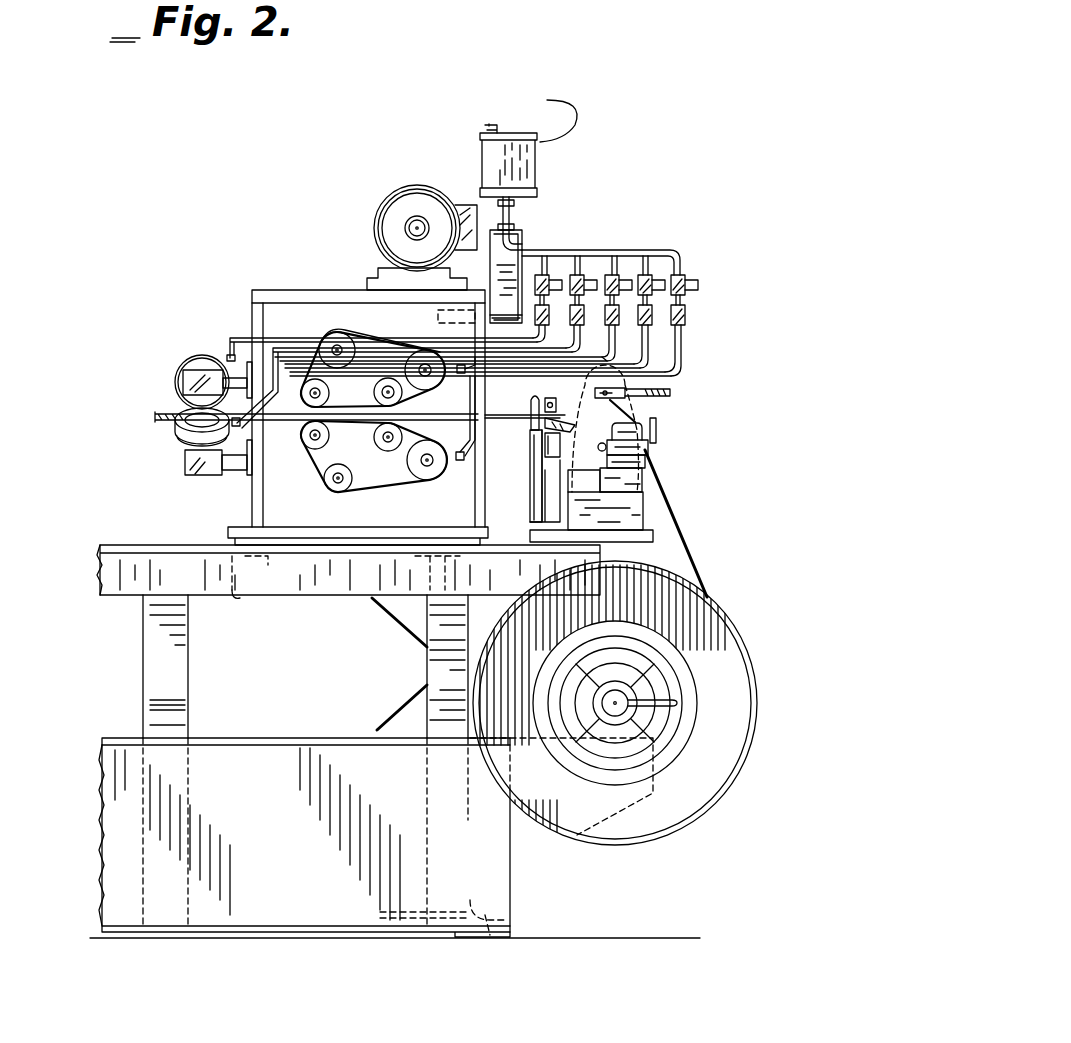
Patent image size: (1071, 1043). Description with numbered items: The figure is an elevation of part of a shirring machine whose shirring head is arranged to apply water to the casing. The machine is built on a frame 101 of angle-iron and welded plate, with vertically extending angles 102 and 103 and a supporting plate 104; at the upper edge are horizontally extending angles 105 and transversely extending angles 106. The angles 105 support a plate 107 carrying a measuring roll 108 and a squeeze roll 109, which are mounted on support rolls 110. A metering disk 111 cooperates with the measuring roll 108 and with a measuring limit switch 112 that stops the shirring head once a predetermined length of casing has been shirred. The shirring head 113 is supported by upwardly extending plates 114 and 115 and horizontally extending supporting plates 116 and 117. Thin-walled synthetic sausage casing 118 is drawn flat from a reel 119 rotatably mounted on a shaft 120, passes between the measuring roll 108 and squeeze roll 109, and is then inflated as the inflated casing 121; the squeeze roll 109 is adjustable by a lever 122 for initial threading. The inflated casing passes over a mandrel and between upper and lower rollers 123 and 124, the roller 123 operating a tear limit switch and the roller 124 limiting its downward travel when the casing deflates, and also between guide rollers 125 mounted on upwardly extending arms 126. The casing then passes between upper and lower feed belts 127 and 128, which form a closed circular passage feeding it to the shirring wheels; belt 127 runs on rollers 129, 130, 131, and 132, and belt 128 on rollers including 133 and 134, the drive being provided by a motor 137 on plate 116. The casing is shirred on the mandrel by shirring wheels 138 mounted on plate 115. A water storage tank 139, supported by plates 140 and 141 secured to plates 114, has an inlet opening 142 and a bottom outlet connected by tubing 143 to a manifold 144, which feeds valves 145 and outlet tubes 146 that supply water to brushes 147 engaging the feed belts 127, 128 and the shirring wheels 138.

The frame 101 is at (85, 648).
The vertically extending angle 102 is at (185, 680).
The vertically extending angle 103 is at (430, 670).
The supporting plate 104 is at (312, 735).
The horizontally extending angle 105 is at (266, 596).
The transversely extending angle 106 is at (240, 598).
The plate 107 is at (638, 540).
The measuring roll 108 is at (576, 470).
The squeeze roll 109 is at (627, 384).
The support rolls 110 is at (630, 406).
The metering disk 111 is at (656, 430).
The measuring limit switch 112 is at (655, 450).
The shirring head 113 is at (191, 307).
The upwardly extending plate 114 is at (473, 510).
The upwardly extending plate 115 is at (256, 497).
The horizontally extending supporting plate 116 is at (318, 292).
The horizontally extending supporting plate 117 is at (330, 532).
The synthetic sausage casing 118 is at (686, 545).
The reel 119 is at (706, 798).
The shaft 120 is at (632, 683).
The inflated casing 121 is at (484, 425).
The lever 122 is at (673, 390).
The upper roller 123 is at (545, 394).
The lower roller 124 is at (562, 456).
The guide rollers 125 is at (530, 404).
The upwardly extending arms 126 is at (532, 484).
The upper feed belt 127 is at (342, 405).
The lower feed belt 128 is at (340, 446).
The roller 129 is at (310, 394).
The roller 130 is at (350, 332).
The roller 131 is at (390, 380).
The roller 132 is at (420, 372).
The roller 133 is at (312, 442).
The roller 134 is at (340, 492).
The motor 137 is at (410, 192).
The shirring wheels 138 is at (182, 363).
The water storage tank 139 is at (484, 164).
The plate 140 is at (494, 274).
The plate 141 is at (490, 322).
The inlet opening 142 is at (482, 128).
The tubing 143 is at (512, 215).
The manifold 144 is at (575, 254).
The valves 145 is at (690, 303).
The outlet tubes 146 is at (624, 340).
The brushes 147 is at (236, 342).